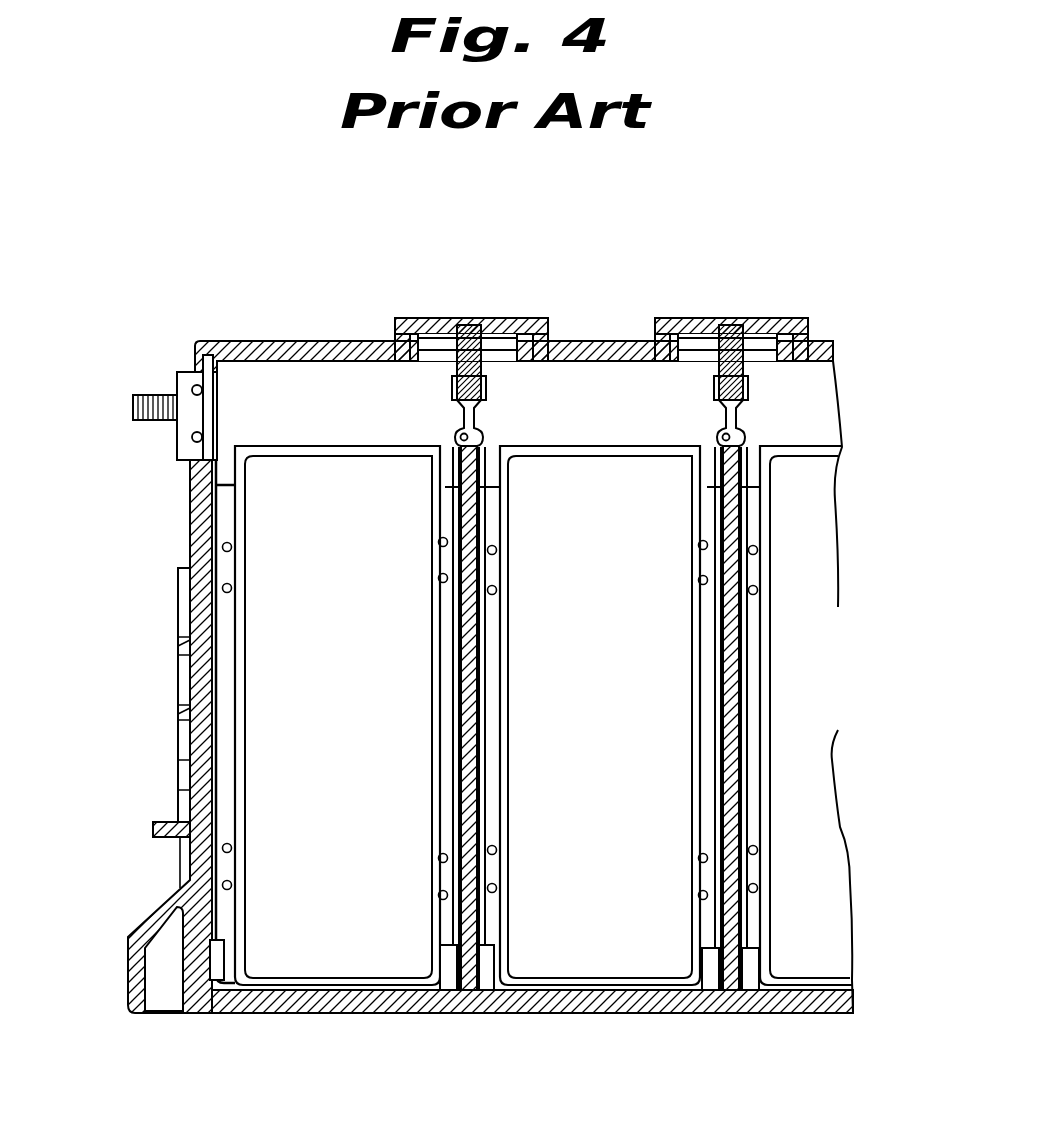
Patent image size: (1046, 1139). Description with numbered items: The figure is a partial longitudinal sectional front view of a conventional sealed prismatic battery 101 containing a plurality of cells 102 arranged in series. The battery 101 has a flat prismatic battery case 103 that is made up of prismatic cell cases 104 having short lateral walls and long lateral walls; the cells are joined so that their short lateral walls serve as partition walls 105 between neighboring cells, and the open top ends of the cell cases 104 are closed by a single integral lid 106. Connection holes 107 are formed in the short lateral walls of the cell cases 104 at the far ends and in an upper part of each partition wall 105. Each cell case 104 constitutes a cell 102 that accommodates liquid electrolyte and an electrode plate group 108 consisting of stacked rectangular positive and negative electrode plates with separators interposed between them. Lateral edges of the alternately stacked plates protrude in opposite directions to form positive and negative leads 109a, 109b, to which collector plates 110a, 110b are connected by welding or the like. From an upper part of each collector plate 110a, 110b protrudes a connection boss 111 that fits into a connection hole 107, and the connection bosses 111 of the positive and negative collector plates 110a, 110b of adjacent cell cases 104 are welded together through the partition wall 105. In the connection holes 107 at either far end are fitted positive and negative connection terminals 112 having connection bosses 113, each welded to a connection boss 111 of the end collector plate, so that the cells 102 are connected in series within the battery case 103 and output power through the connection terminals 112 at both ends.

The sealed prismatic battery 101 is at (200, 305).
The cell 102 is at (213, 1000).
The battery case 103 is at (165, 686).
The cell case 104 is at (305, 439).
The partition wall 105 is at (478, 512).
The lid 106 is at (260, 341).
The connection hole 107 is at (203, 432).
The electrode plate group 108 is at (335, 646).
The positive lead 109a is at (488, 662).
The negative lead 109b is at (443, 670).
The positive collector plate 110a is at (480, 692).
The negative collector plate 110b is at (458, 707).
The connection boss 111 is at (203, 405).
The connection terminal 112 is at (150, 395).
The connection boss 113 is at (175, 422).